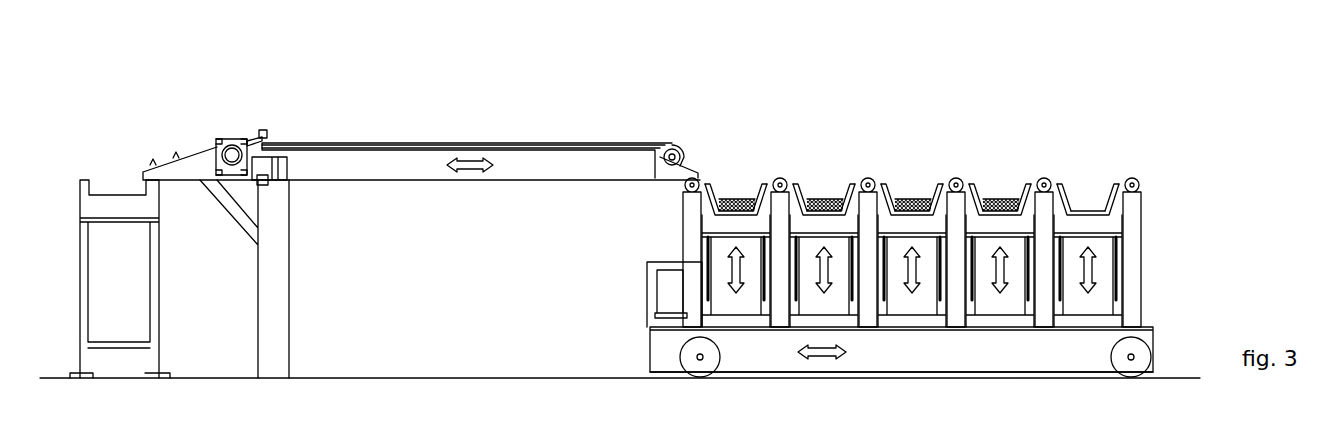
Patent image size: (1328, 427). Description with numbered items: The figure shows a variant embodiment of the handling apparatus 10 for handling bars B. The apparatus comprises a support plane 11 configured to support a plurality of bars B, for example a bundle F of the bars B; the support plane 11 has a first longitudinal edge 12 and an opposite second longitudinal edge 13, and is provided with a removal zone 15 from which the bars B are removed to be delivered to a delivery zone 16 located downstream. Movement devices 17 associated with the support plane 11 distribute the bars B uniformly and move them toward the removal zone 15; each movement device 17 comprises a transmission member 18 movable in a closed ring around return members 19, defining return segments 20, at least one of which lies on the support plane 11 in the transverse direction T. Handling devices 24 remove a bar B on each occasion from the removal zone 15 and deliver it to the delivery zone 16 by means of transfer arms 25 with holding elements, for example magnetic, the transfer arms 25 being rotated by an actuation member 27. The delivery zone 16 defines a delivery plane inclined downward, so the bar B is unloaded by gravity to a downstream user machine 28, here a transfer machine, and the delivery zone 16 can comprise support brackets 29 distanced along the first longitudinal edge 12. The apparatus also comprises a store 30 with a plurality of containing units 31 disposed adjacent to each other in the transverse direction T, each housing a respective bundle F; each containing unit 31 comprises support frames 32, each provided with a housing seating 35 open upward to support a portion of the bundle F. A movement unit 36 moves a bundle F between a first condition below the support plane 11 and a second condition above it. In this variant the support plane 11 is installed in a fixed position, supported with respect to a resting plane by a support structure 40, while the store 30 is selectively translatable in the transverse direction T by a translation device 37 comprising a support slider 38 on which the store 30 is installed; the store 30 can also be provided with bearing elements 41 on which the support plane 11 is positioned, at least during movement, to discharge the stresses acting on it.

The handling apparatus 10 is at (1083, 70).
The support plane 11 is at (459, 98).
The first longitudinal edge 12 is at (672, 138).
The second longitudinal edge 13 is at (280, 131).
The removal zone 15 is at (252, 133).
The delivery zone 16 is at (195, 143).
The movement device 17 is at (483, 138).
The transmission member 18 is at (541, 146).
The return member 19 is at (681, 152).
The return segment 20 is at (417, 148).
The handling device 24 is at (237, 138).
The transfer arm 25 is at (262, 130).
The actuation member 27 is at (283, 160).
The user machine 28 is at (112, 176).
The support bracket 29 is at (186, 170).
The store 30 is at (915, 112).
The containing unit 31 is at (714, 180).
The support frame 32 is at (904, 222).
The housing seating 35 is at (797, 183).
The movement unit 36 is at (716, 292).
The translation device 37 is at (1172, 346).
The support slider 38 is at (932, 353).
The support structure 40 is at (277, 287).
The bearing element 41 is at (692, 208).
The bar B is at (741, 194).
The bundle F is at (752, 185).
The transverse direction T is at (470, 168).